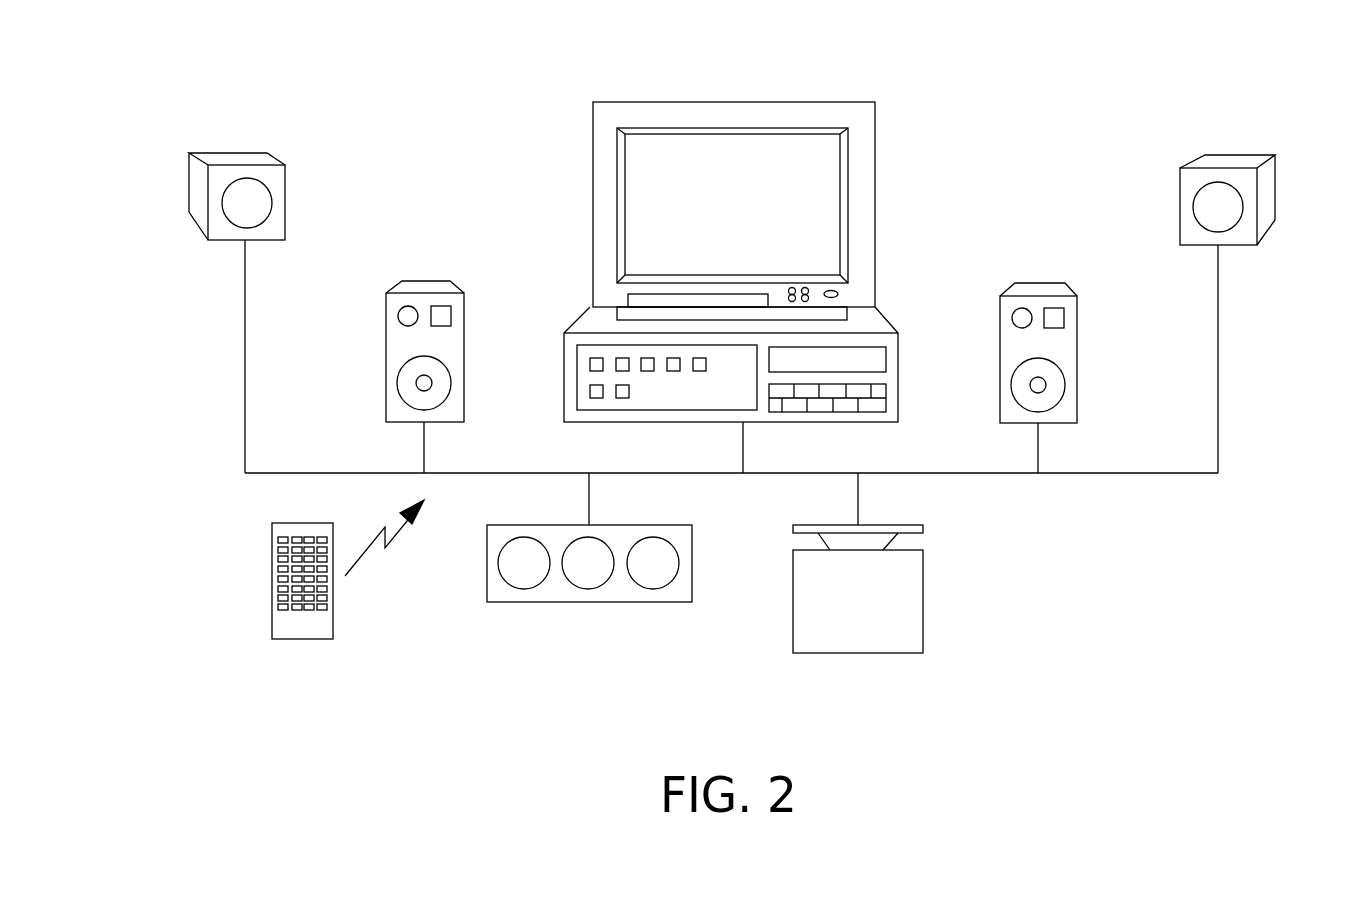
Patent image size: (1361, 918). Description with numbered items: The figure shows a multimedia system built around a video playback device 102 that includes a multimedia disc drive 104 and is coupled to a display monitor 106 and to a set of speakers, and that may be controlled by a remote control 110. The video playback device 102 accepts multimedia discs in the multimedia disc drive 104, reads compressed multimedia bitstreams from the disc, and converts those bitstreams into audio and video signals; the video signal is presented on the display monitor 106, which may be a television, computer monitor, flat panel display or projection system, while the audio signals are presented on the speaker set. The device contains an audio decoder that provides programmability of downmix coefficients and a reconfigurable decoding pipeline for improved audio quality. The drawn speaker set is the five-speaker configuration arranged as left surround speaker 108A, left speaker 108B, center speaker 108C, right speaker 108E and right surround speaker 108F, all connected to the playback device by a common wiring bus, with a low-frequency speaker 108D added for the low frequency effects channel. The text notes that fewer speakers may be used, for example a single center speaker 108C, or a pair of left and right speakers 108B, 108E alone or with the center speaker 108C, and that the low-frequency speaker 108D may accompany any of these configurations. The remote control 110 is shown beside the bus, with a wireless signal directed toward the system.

The video playback device 102 is at (773, 378).
The multimedia disc drive 104 is at (887, 358).
The display monitor 106 is at (733, 102).
The left surround speaker 108A is at (220, 242).
The left speaker 108B is at (425, 281).
The center speaker 108C is at (537, 603).
The low-frequency speaker 108D is at (898, 637).
The right speaker 108E is at (1038, 283).
The right surround speaker 108F is at (1240, 245).
The remote control 110 is at (300, 640).